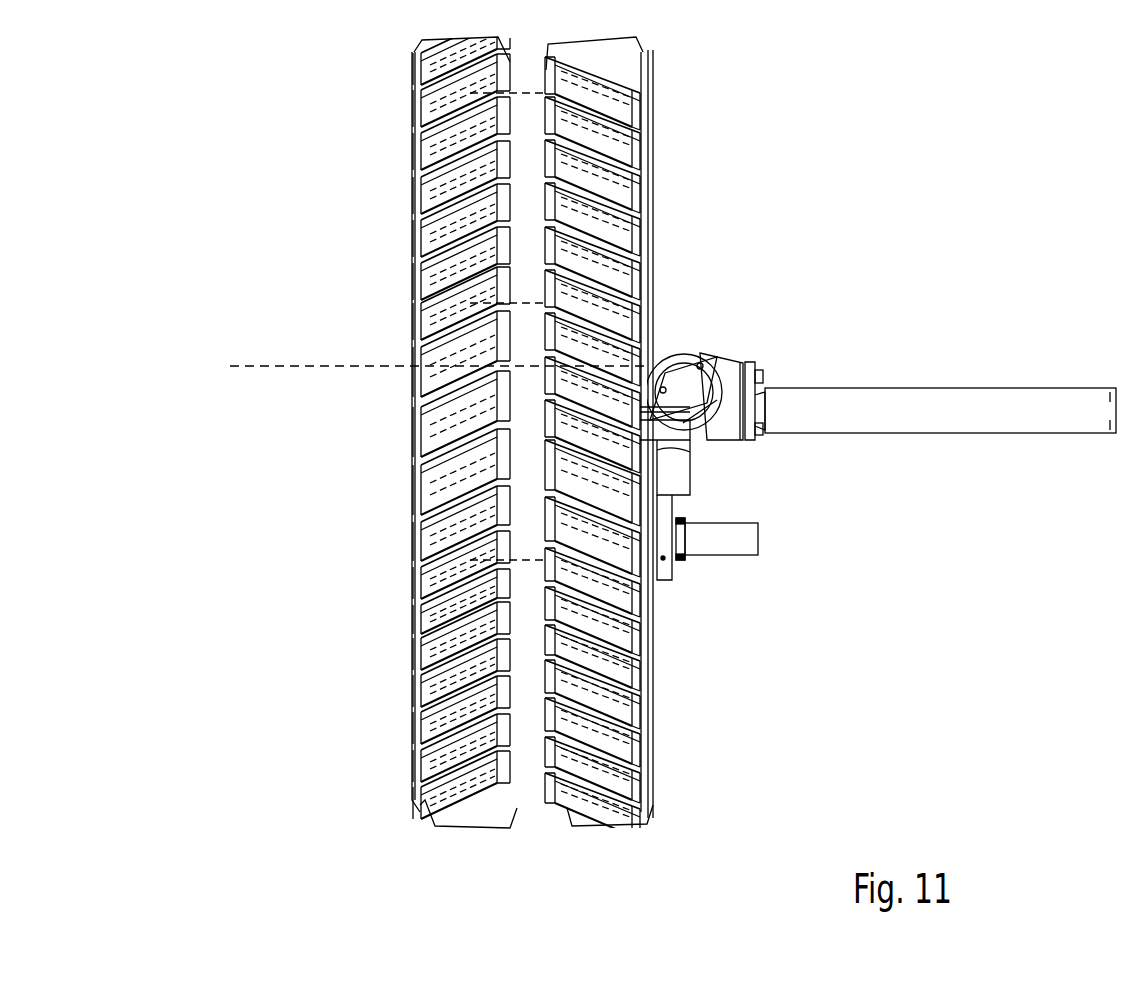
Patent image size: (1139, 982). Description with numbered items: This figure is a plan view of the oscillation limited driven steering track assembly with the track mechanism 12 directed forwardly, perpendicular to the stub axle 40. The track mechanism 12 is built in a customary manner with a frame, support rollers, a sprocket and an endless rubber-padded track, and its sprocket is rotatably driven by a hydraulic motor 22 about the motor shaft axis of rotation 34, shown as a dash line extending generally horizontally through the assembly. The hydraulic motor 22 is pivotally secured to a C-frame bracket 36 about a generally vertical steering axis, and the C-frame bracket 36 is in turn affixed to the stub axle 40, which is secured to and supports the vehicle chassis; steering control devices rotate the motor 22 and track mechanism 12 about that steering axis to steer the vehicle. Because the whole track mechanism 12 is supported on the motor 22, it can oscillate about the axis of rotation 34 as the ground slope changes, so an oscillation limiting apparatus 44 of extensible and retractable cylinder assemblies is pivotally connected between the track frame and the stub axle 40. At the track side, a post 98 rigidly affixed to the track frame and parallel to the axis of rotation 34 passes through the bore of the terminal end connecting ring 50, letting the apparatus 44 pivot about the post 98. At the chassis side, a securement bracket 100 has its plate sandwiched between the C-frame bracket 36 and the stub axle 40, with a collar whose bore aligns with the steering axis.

The track mechanism 12 is at (413, 173).
The hydraulic motor 22 is at (658, 343).
The axis of rotation 34 is at (422, 367).
The C-frame bracket 36 is at (735, 363).
The stub axle 40 is at (930, 405).
The oscillation limiting apparatus 44 is at (687, 471).
The terminal end connecting ring 50 is at (667, 570).
The post 98 is at (738, 545).
The securement bracket 100 is at (758, 367).